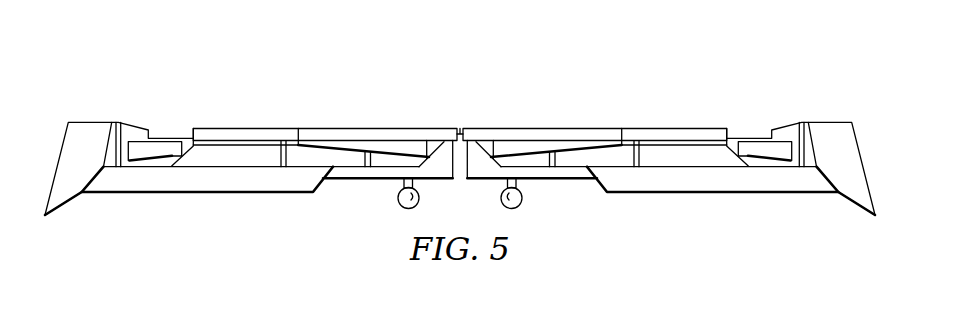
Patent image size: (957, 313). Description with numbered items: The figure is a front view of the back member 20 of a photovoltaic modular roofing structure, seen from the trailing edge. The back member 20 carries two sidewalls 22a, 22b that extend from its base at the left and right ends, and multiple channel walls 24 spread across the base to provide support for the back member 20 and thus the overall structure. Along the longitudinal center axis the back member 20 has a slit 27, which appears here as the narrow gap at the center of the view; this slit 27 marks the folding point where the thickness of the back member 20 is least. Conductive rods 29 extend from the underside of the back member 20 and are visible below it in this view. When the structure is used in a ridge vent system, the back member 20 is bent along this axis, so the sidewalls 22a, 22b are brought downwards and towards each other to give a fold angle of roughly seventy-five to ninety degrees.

The back member 20 is at (384, 96).
The sidewall 22a is at (87, 135).
The sidewall 22b is at (833, 135).
The channel wall 24 is at (190, 193).
The slit 27 is at (460, 123).
The conductive rod 29 is at (397, 198).